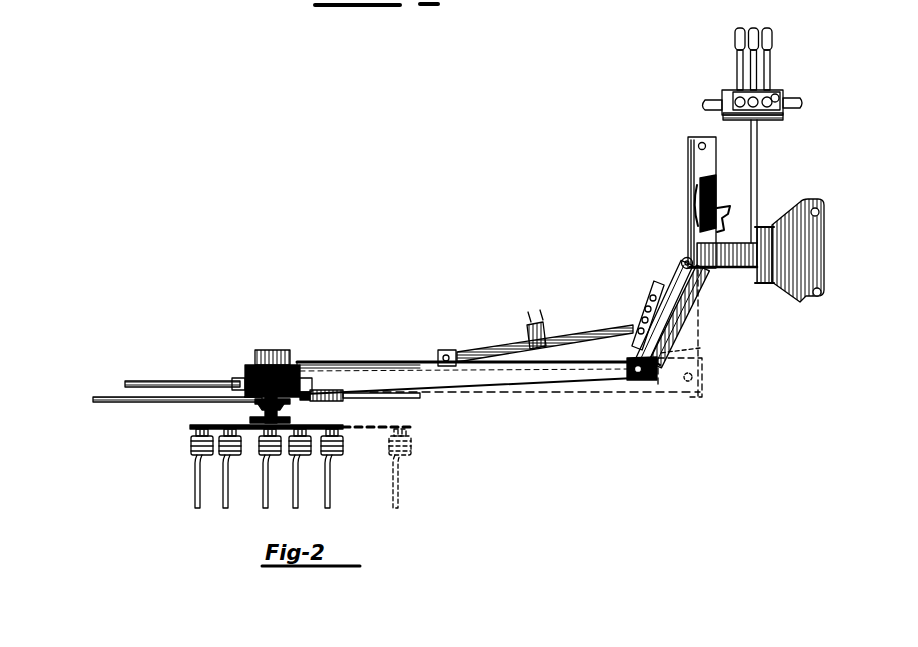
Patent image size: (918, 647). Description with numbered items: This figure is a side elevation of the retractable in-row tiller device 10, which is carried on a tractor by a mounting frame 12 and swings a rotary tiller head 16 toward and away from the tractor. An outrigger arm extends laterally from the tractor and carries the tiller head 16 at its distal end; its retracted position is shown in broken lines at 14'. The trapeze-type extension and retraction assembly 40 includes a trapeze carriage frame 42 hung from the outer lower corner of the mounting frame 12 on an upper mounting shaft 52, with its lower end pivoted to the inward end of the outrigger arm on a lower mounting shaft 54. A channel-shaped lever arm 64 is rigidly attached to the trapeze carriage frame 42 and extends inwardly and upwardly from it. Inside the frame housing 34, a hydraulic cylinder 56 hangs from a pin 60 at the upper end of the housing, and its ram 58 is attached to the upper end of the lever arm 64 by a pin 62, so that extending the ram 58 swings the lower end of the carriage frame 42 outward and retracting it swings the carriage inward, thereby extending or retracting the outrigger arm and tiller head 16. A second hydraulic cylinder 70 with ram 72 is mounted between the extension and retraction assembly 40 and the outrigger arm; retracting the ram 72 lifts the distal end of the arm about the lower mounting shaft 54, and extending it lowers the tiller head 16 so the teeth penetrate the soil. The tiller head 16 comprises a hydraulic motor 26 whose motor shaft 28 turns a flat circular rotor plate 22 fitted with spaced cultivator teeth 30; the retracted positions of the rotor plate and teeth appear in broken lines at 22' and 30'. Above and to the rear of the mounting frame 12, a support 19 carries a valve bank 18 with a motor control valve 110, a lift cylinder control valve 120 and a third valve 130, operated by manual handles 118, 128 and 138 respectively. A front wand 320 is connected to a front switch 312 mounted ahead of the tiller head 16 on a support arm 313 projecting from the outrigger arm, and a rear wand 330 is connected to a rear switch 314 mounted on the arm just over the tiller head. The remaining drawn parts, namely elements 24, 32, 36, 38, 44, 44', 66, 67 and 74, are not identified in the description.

The retractable tiller device 10 is at (362, 344).
The mounting frame 12 is at (799, 276).
The outrigger arm in retracted position 14' is at (564, 344).
The rotary tiller head 16 is at (257, 477).
The valve bank 18 is at (786, 91).
The support 19 is at (757, 155).
The rotor plate 22 is at (290, 416).
The rotor plate in retracted position 22' is at (422, 460).
The swivel coupling 24 is at (262, 419).
The hydraulic motor 26 is at (270, 349).
The motor shaft 28 is at (284, 419).
The cultivator teeth 30 is at (282, 477).
The cultivator teeth in retracted position 30' is at (422, 468).
The mounting plate 32 is at (821, 250).
The frame housing 34 is at (686, 195).
The clamp block 36 is at (742, 268).
The support plate 38 is at (688, 191).
The extension and retraction assembly 40 is at (674, 331).
The trapeze carriage frame 42 is at (676, 328).
The pivot link 44 is at (687, 400).
The alternate pivot link position 44' is at (708, 363).
The upper mounting shaft 52 is at (682, 260).
The lower mounting shaft 54 is at (628, 383).
The hydraulic cylinder 56 is at (717, 184).
The ram 58 is at (719, 226).
The pin 60 is at (699, 143).
The pin 62 is at (699, 293).
The lever arm 64 is at (704, 328).
The adjustment holes 66 is at (655, 292).
The clevis 67 is at (642, 302).
The hydraulic cylinder 70 is at (587, 327).
The ram 72 is at (492, 346).
The rod bracket 74 is at (443, 350).
The motor control valve 110 is at (770, 90).
The manual operating handle 118 is at (771, 44).
The lift cylinder control valve 120 is at (748, 90).
The manual operating handle 128 is at (754, 27).
The valve 130 is at (736, 92).
The manual operating handle 138 is at (739, 27).
The front switch 312 is at (330, 402).
The support arm 313 is at (395, 399).
The rear switch 314 is at (250, 365).
The front wand 320 is at (110, 396).
The rear wand 330 is at (160, 380).